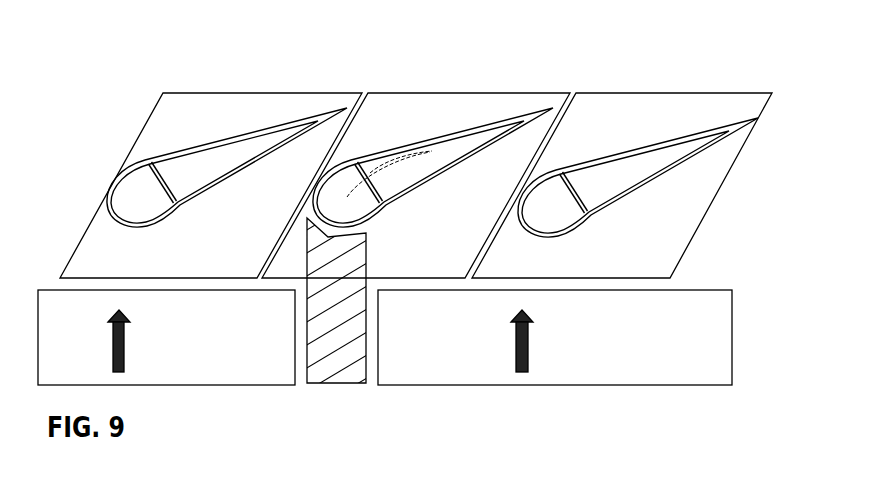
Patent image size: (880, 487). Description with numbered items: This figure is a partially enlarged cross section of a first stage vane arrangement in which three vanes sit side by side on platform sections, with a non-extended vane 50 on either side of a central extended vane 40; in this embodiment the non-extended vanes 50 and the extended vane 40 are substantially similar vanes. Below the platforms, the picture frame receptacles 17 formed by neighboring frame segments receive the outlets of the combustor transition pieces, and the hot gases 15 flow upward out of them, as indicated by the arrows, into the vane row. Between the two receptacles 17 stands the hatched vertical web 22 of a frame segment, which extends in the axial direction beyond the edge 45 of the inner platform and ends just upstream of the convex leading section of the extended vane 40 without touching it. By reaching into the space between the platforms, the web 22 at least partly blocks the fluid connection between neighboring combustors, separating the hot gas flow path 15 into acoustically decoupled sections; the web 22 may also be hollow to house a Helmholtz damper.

The hot gases 15 is at (334, 341).
The picture frame receptacle 17 is at (217, 344).
The vertical web 22 is at (351, 353).
The extended vane 40 is at (455, 135).
The edge of the inner platform 45 is at (448, 279).
The non-extended vane 50 is at (250, 137).